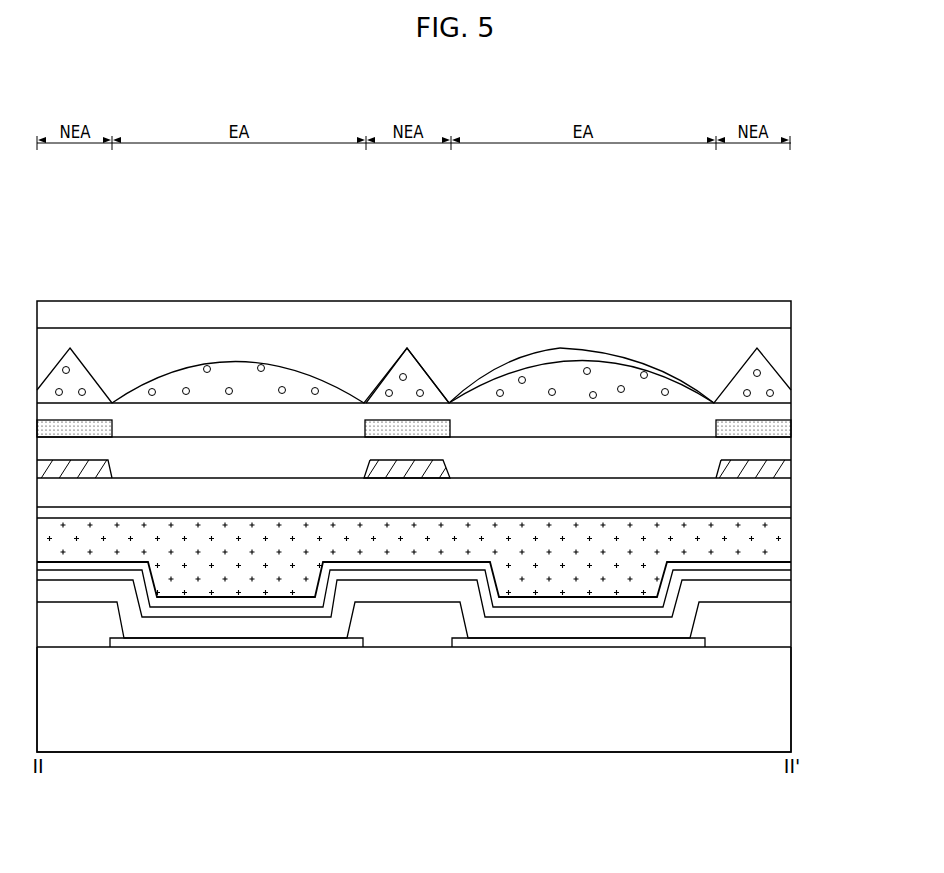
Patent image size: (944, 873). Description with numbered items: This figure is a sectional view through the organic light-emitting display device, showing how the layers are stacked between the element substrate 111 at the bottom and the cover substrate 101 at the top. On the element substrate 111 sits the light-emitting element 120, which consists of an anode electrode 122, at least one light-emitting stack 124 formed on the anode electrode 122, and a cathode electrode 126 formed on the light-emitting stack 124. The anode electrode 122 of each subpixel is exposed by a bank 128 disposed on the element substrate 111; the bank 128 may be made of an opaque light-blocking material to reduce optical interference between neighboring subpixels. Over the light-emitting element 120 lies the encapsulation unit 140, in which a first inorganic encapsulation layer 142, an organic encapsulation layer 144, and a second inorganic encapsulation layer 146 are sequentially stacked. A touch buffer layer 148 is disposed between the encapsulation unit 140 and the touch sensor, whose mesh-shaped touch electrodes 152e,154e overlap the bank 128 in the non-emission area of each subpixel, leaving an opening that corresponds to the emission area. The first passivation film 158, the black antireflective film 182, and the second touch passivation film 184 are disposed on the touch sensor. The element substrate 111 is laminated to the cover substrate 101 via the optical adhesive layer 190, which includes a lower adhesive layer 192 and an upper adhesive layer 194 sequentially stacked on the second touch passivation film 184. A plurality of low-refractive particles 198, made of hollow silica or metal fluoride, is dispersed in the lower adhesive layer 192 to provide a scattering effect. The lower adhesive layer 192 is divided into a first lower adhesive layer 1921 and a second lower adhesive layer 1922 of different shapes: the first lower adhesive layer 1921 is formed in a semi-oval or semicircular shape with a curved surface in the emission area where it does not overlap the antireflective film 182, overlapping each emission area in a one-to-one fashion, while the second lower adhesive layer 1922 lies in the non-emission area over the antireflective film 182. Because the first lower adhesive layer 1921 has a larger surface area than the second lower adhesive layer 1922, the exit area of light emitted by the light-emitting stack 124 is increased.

The cover substrate 101 is at (782, 316).
The low-refractive particle 198 is at (770, 392).
The optical adhesive layer 190 is at (540, 283).
The lower adhesive layer 192 is at (463, 307).
The second lower adhesive layer 1922 is at (417, 385).
The first lower adhesive layer 1921 is at (485, 378).
The upper adhesive layer 194 is at (533, 338).
The second touch passivation film 184 is at (772, 414).
The antireflective film 182 is at (770, 428).
The first passivation film 158 is at (783, 449).
The first and second touch electrodes 152e,154e is at (438, 472).
The touch buffer layer 148 is at (782, 487).
The second inorganic encapsulation layer 146 is at (782, 513).
The organic encapsulation layer 144 is at (782, 540).
The first inorganic encapsulation layer 142 is at (438, 574).
The encapsulation unit 140 is at (463, 547).
The bank 128 is at (782, 623).
The light-emitting element 120 is at (414, 706).
The anode electrode 122 is at (192, 642).
The light-emitting stack 124 is at (237, 632).
The cathode electrode 126 is at (282, 612).
The element substrate 111 is at (782, 704).